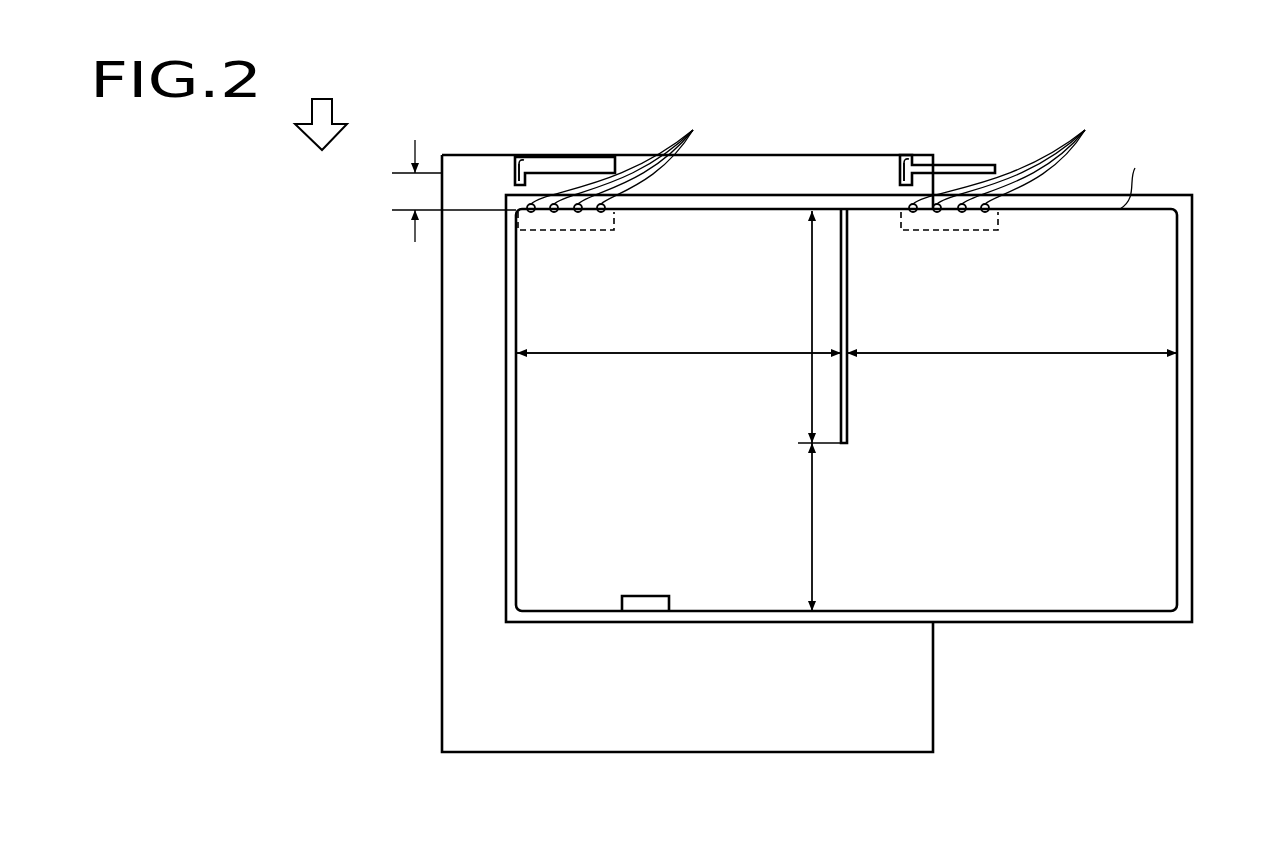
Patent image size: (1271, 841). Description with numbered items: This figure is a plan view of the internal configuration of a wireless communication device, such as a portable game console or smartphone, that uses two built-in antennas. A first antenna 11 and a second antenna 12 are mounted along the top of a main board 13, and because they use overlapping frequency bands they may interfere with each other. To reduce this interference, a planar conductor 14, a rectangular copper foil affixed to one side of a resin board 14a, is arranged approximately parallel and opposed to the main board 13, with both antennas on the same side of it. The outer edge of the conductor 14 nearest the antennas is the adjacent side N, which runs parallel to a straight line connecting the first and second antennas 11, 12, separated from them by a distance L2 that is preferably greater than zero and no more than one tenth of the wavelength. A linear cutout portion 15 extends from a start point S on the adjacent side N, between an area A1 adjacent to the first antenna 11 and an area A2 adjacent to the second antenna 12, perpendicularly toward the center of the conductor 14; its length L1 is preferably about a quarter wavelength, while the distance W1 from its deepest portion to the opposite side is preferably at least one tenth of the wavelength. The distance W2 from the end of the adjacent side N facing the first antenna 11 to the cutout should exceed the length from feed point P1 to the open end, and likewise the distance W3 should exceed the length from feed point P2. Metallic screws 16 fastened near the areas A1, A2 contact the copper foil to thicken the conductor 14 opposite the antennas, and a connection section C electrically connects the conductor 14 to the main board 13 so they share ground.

The first antenna 11 is at (582, 161).
The second antenna 12 is at (973, 164).
The main board 13 is at (878, 752).
The conductor 14 is at (1166, 283).
The board 14a is at (1192, 223).
The cutout portion 15 is at (847, 418).
The metallic screws 16 is at (812, 155).
The feed point of the first antenna P1 is at (533, 166).
The feed point of the second antenna P2 is at (900, 171).
The start point S is at (846, 209).
The adjacent side N is at (1131, 174).
The connection section C is at (645, 604).
The area adjacent to the first antenna A1 is at (570, 232).
The area adjacent to the second antenna A2 is at (952, 232).
The length of the cutout portion L1 is at (809, 327).
The distance between the antennas and the conductor L2 is at (448, 191).
The distance between the deepest portion of the cutout and the opposite side W1 is at (792, 527).
The distance from the adjacent side end facing the first antenna to the cutout W2 is at (679, 368).
The distance from the adjacent side end facing the second antenna to the cutout W3 is at (1012, 368).